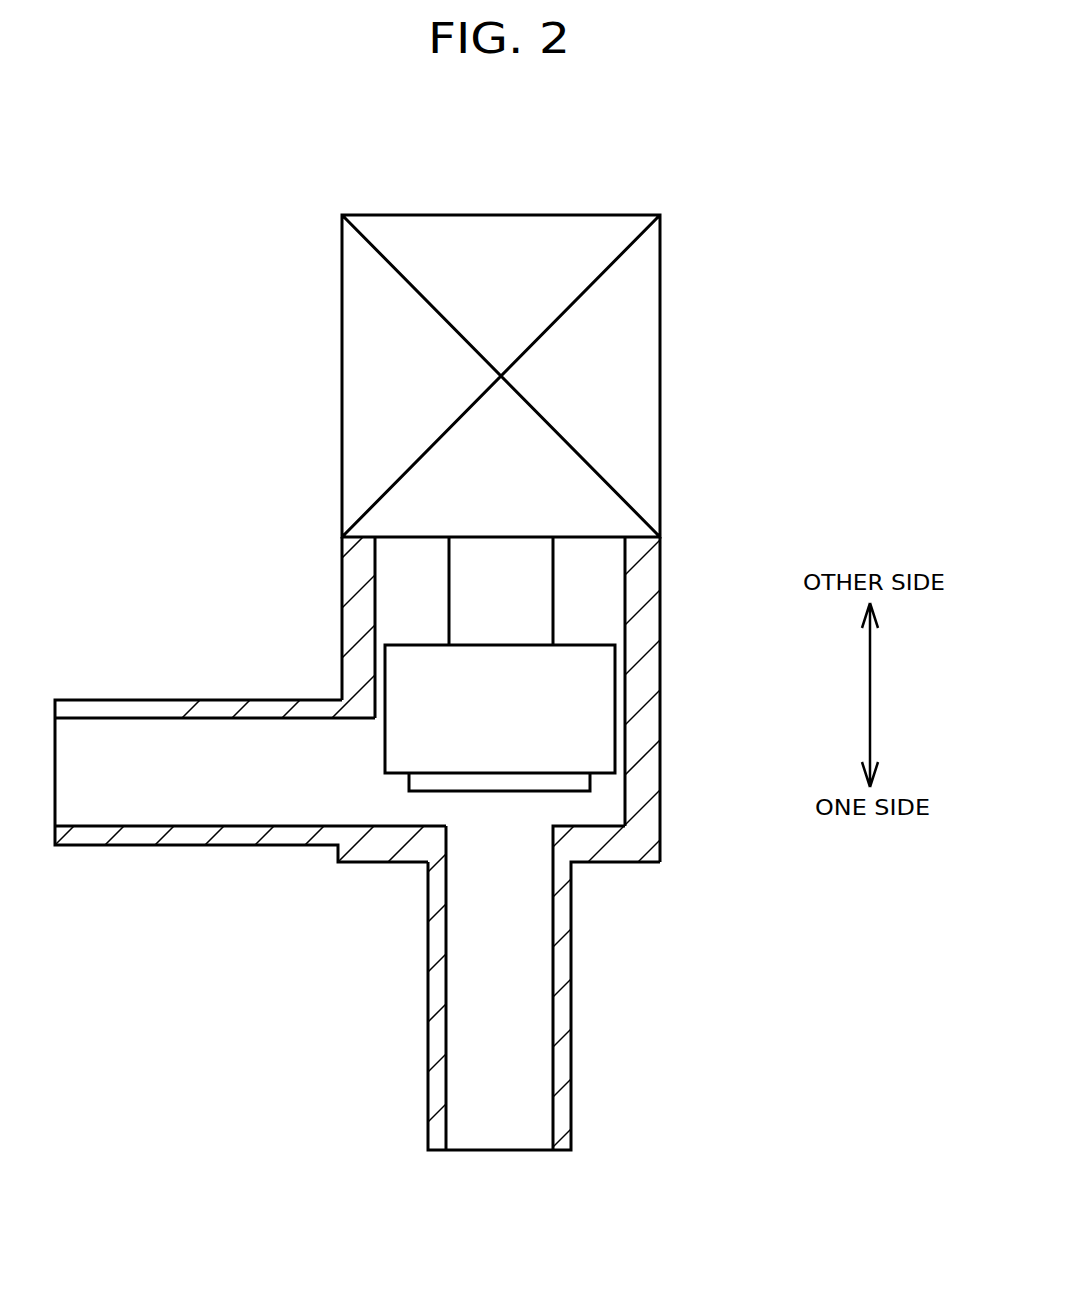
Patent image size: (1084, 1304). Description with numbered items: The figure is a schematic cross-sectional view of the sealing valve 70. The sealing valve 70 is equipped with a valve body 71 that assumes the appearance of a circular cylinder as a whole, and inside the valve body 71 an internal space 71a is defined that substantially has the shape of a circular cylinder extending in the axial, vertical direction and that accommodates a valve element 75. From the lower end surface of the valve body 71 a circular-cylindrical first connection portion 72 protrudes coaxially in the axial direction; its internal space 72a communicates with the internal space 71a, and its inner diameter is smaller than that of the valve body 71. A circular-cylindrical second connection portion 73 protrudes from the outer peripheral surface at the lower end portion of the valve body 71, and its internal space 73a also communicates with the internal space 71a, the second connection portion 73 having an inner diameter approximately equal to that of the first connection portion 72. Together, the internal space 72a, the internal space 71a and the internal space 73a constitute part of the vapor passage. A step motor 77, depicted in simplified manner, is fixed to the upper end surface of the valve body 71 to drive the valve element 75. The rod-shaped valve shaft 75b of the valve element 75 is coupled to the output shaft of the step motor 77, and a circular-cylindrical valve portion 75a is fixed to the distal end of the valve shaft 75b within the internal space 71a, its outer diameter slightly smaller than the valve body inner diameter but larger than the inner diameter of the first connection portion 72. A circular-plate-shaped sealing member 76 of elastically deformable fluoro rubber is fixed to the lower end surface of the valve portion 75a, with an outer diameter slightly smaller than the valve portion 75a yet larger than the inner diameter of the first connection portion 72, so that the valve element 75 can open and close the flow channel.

The sealing valve 70 is at (172, 225).
The valve body 71 is at (338, 573).
The internal space 71a is at (395, 595).
The first connection portion 72 is at (572, 1003).
The internal space 72a is at (520, 926).
The second connection portion 73 is at (127, 847).
The internal space 73a is at (249, 790).
The valve element 75 is at (738, 600).
The valve portion 75a is at (615, 655).
The valve shaft 75b is at (552, 598).
The sealing member 76 is at (580, 790).
The step motor 77 is at (663, 280).